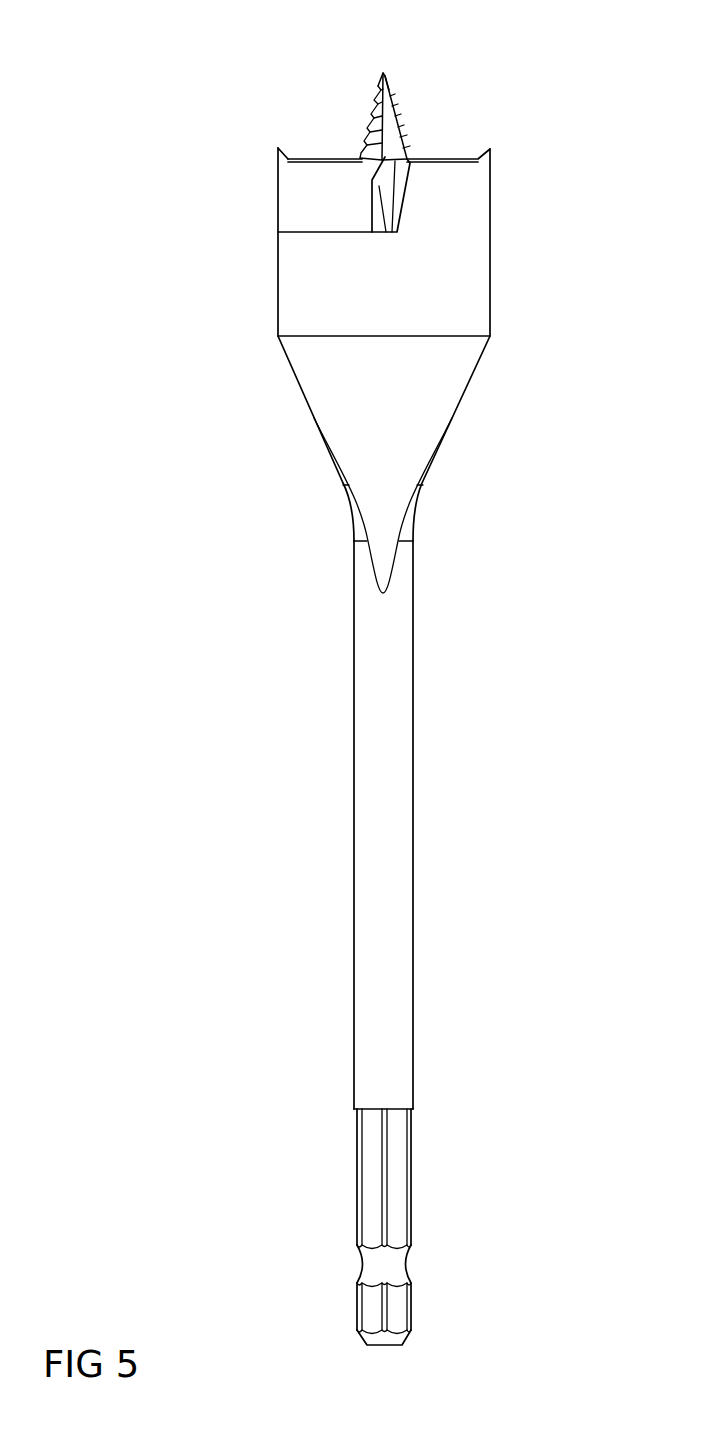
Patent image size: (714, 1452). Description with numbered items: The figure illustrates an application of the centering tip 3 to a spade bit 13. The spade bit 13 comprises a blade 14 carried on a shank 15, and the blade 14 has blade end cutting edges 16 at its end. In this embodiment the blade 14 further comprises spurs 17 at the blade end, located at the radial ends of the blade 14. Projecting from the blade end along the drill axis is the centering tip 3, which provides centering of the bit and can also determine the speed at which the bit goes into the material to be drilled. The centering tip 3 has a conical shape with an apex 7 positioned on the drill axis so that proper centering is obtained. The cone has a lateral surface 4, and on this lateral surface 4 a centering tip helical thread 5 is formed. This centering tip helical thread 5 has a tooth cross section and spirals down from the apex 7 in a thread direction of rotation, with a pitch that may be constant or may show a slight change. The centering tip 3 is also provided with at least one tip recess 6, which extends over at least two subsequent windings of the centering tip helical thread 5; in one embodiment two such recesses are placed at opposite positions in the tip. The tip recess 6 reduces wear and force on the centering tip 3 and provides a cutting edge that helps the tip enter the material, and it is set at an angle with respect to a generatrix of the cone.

The centering tip 3 is at (311, 105).
The lateral surface 4 is at (400, 127).
The centering tip helical thread 5 is at (377, 92).
The tip recess 6 is at (375, 145).
The apex 7 is at (383, 73).
The spade bit 13 is at (183, 356).
The blade 14 is at (477, 245).
The shank 15 is at (393, 743).
The blade end cutting edges 16 is at (457, 158).
The spurs 17 is at (277, 149).